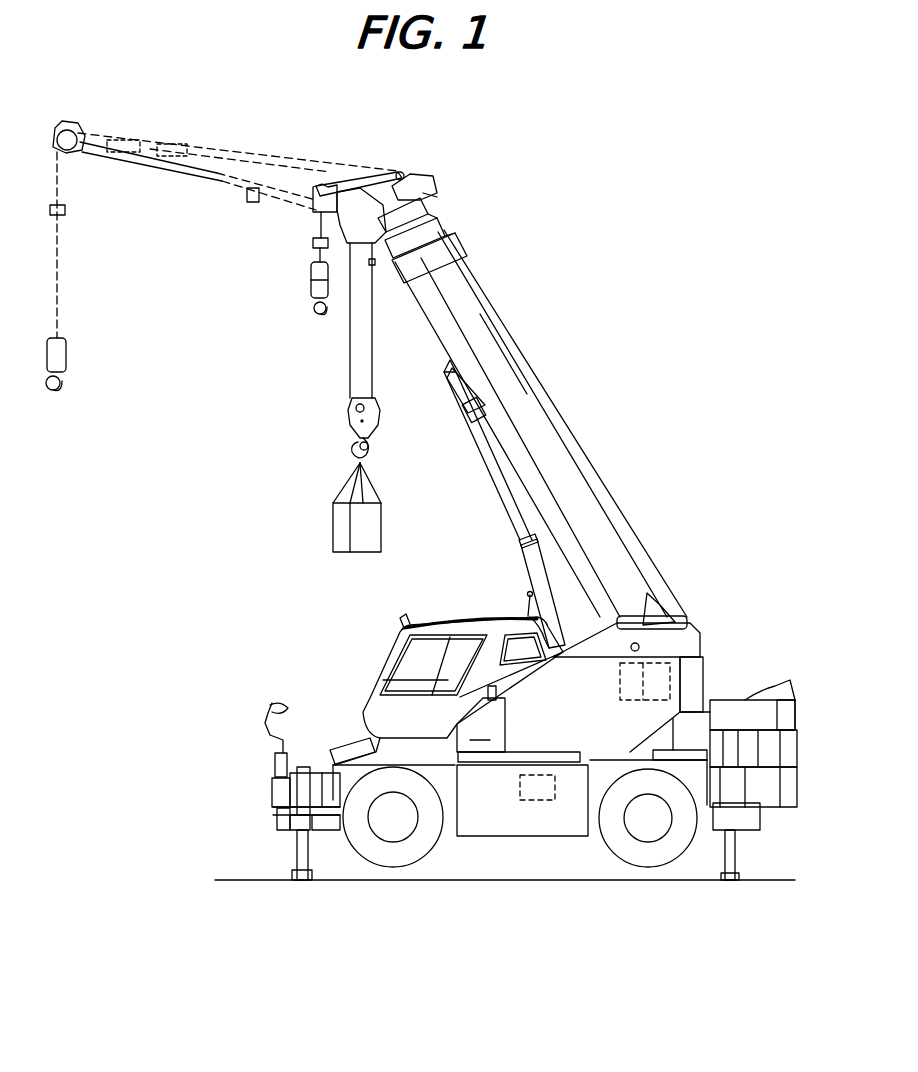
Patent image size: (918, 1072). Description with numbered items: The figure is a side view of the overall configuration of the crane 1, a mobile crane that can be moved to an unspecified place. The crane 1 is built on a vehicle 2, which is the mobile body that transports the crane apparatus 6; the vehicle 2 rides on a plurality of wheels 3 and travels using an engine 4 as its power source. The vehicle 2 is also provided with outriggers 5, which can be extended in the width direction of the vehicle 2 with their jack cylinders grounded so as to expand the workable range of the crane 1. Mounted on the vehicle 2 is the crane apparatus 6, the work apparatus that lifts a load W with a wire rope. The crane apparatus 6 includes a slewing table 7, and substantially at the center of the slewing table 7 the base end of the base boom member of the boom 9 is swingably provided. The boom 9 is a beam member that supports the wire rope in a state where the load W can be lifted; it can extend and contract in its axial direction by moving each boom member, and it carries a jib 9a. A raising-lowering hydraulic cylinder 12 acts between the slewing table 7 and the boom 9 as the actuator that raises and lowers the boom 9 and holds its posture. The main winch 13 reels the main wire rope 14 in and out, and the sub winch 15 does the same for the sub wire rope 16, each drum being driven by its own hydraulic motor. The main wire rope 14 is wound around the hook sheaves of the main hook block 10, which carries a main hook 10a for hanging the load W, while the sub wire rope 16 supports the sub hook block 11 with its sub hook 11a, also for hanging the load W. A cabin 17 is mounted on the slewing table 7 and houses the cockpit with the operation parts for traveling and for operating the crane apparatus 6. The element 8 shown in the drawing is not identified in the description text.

The crane 1 is at (700, 151).
The vehicle 2 is at (232, 780).
The wheels 3 is at (390, 862).
The engine 4 is at (745, 700).
The outriggers 5 is at (296, 840).
The crane apparatus 6 is at (682, 318).
The slewing table 7 is at (483, 765).
The controller 8 is at (540, 800).
The boom 9 is at (543, 356).
The jib 9a is at (205, 180).
The main hook block 10 is at (370, 425).
The main hook 10a is at (372, 452).
The sub hook block 11 is at (310, 277).
The sub hook 11a is at (312, 311).
The raising-lowering hydraulic cylinder 12 is at (515, 515).
The main winch 13 is at (663, 612).
The main wire rope 14 is at (374, 393).
The sub winch 15 is at (703, 660).
The sub wire rope 16 is at (312, 235).
The cabin 17 is at (380, 665).
The load W is at (382, 530).